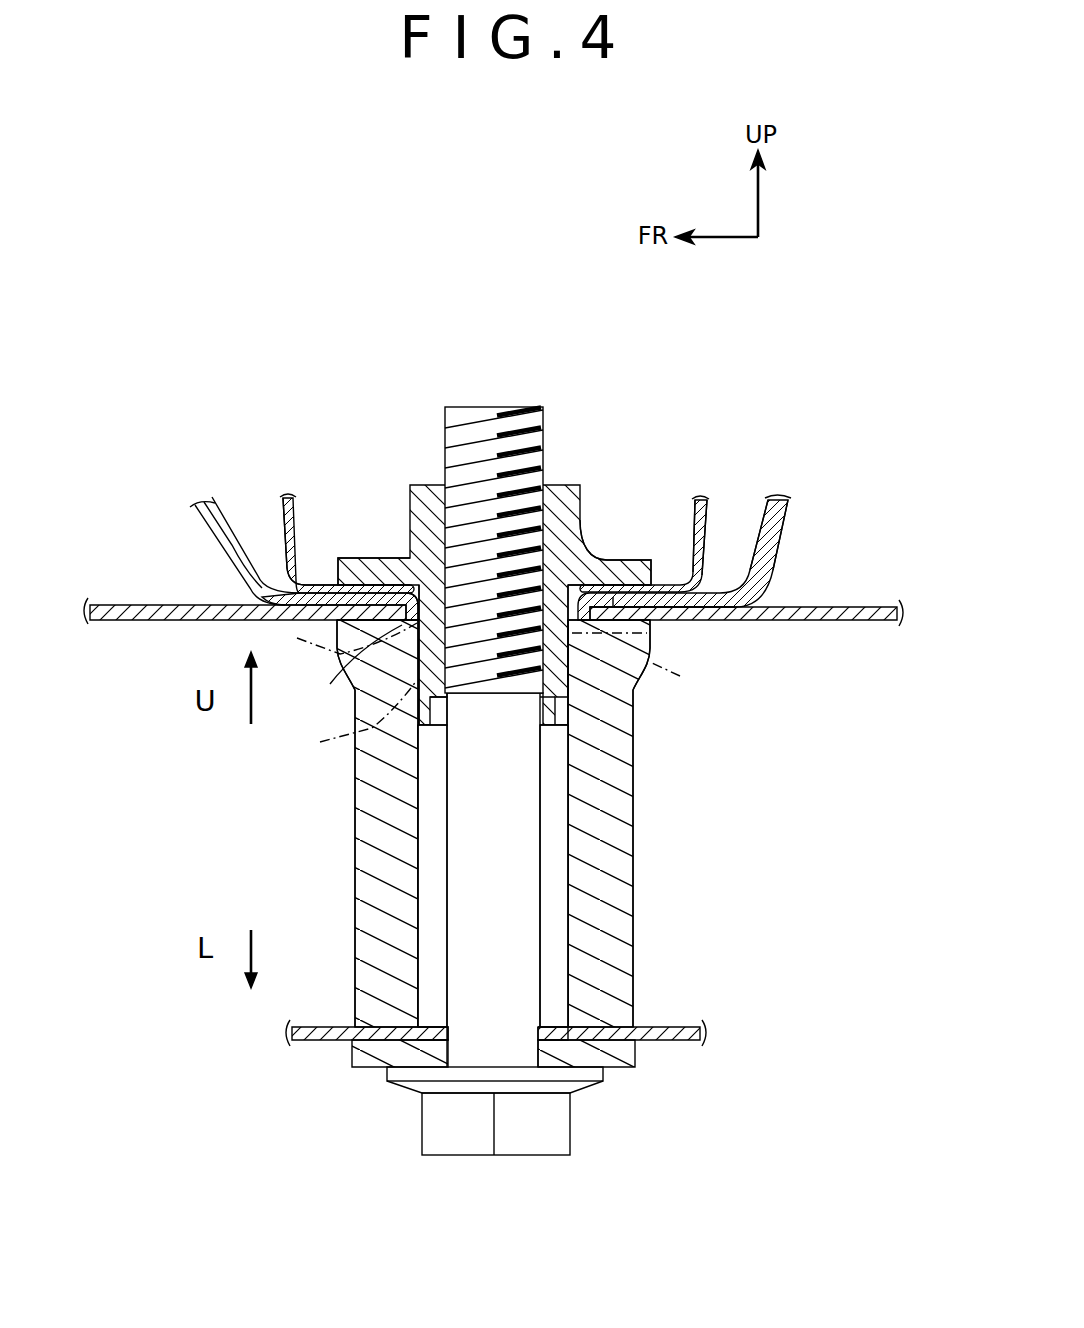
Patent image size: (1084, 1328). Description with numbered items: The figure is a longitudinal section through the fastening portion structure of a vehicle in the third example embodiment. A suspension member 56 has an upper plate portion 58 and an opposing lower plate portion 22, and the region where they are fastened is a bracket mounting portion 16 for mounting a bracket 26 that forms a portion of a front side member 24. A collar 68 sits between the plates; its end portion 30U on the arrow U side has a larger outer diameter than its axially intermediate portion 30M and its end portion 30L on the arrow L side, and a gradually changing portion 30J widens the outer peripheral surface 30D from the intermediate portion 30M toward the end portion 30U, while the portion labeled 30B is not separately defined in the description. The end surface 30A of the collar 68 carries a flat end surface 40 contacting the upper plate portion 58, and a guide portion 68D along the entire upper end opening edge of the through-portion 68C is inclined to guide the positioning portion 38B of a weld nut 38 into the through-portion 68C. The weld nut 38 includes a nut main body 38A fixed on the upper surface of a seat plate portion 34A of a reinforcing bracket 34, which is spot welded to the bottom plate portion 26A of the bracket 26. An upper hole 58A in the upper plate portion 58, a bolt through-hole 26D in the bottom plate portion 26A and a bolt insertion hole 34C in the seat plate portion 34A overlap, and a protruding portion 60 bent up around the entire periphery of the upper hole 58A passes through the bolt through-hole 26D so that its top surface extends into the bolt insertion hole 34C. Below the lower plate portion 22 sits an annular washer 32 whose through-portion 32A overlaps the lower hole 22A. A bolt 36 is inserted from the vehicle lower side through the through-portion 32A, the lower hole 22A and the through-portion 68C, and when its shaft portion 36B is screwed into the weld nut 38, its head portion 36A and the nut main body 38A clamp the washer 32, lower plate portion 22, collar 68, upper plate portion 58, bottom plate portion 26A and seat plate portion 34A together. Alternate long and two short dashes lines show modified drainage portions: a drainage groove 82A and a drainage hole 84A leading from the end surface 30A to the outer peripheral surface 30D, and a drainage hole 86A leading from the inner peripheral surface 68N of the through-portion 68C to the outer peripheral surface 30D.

The bracket mounting portion 16 is at (312, 440).
The lower plate portion 22 is at (687, 1017).
The lower hole 22A is at (425, 1012).
The front side member 24 is at (816, 505).
The bracket 26 is at (798, 551).
The bottom plate portion 26A is at (716, 592).
The bolt through-hole 26D is at (402, 583).
The end surface 30A is at (342, 605).
The bracket lower flange 30B is at (370, 1068).
The outer peripheral surface 30D is at (659, 795).
The gradually changing portion 30J is at (645, 675).
The end portion on the other side in the axial direction 30L is at (635, 1003).
The axially intermediate portion 30M is at (637, 835).
The end portion on one side in the axial direction 30U is at (679, 637).
The washer 32 is at (378, 1084).
The through-portion 32A is at (450, 1020).
The reinforcing bracket 34 is at (725, 507).
The seat plate portion 34A is at (668, 583).
The bolt insertion hole 34C is at (388, 578).
The bolt 36 is at (566, 1178).
The head portion 36A is at (570, 1130).
The shaft portion 36B is at (545, 407).
The weld nut 38 is at (605, 479).
The nut main body 38A is at (585, 525).
The positioning portion 38B is at (572, 668).
The flat end surface 40 is at (655, 612).
The suspension member 56 is at (873, 567).
The upper plate portion 58 is at (827, 645).
The upper hole 58A is at (335, 665).
The protruding portion 60 is at (596, 568).
The collar 68 is at (737, 818).
The through-portion 68C is at (437, 833).
The guide portion 68D is at (450, 703).
The inner peripheral surface 68N is at (422, 785).
The drainage groove 82A is at (653, 667).
The drainage hole 84A is at (327, 638).
The drainage hole 86A is at (339, 717).